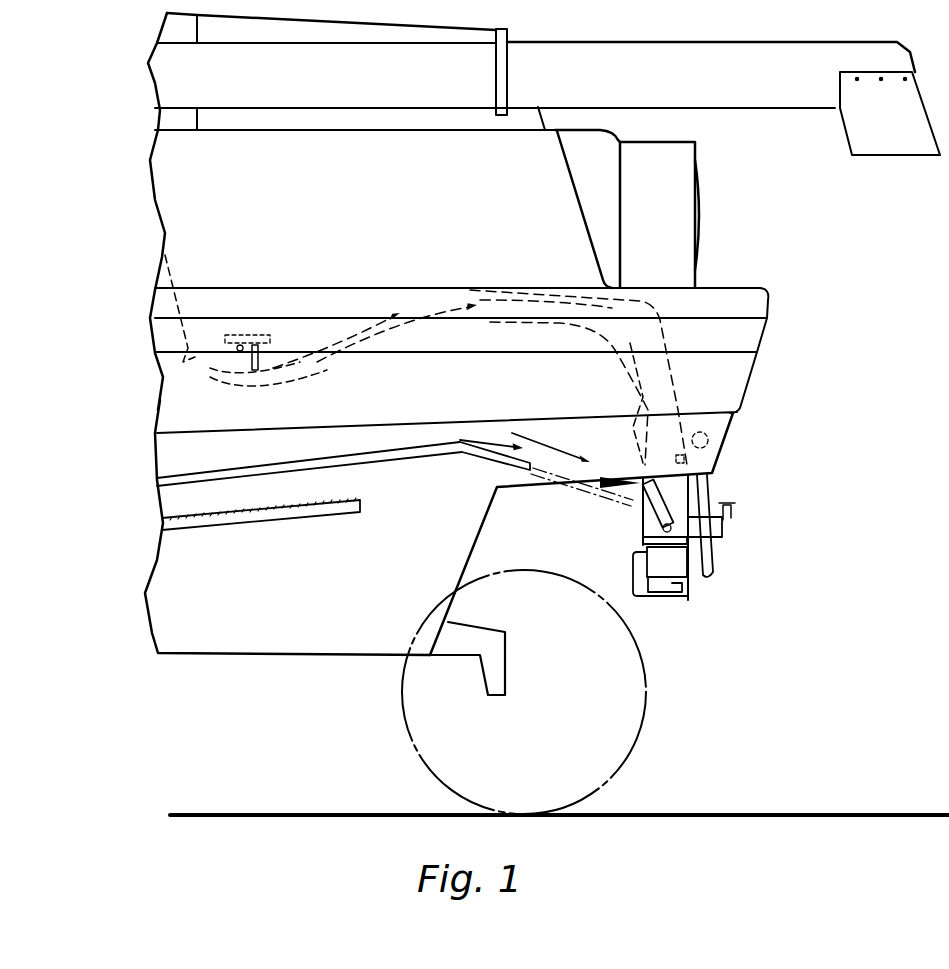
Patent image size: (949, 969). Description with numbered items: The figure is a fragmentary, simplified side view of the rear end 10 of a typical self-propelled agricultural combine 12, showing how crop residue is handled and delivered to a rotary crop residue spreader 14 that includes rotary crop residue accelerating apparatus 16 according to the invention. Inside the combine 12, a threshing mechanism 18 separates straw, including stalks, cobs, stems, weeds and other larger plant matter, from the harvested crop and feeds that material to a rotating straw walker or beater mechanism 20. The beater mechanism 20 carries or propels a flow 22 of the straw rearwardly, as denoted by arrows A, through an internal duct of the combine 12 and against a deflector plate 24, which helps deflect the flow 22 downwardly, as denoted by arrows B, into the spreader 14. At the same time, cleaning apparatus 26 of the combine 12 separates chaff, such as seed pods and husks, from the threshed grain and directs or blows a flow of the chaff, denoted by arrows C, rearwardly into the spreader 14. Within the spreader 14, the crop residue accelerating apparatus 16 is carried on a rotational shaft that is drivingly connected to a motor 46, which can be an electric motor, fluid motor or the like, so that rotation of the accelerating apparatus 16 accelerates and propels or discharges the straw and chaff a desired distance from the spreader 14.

The rear end 10 is at (770, 297).
The agricultural combine 12 is at (107, 651).
The rotary crop residue spreader 14 is at (692, 600).
The rotary crop residue accelerating apparatus 16 is at (660, 600).
The threshing mechanism 18 is at (170, 272).
The straw walker or beater mechanism 20 is at (272, 336).
The flow of straw 22 is at (443, 302).
The deflector plate 24 is at (660, 333).
The cleaning apparatus 26 is at (185, 473).
The motor 46 is at (717, 535).
The arrows A is at (470, 320).
The arrows B is at (617, 391).
The arrows C is at (585, 480).